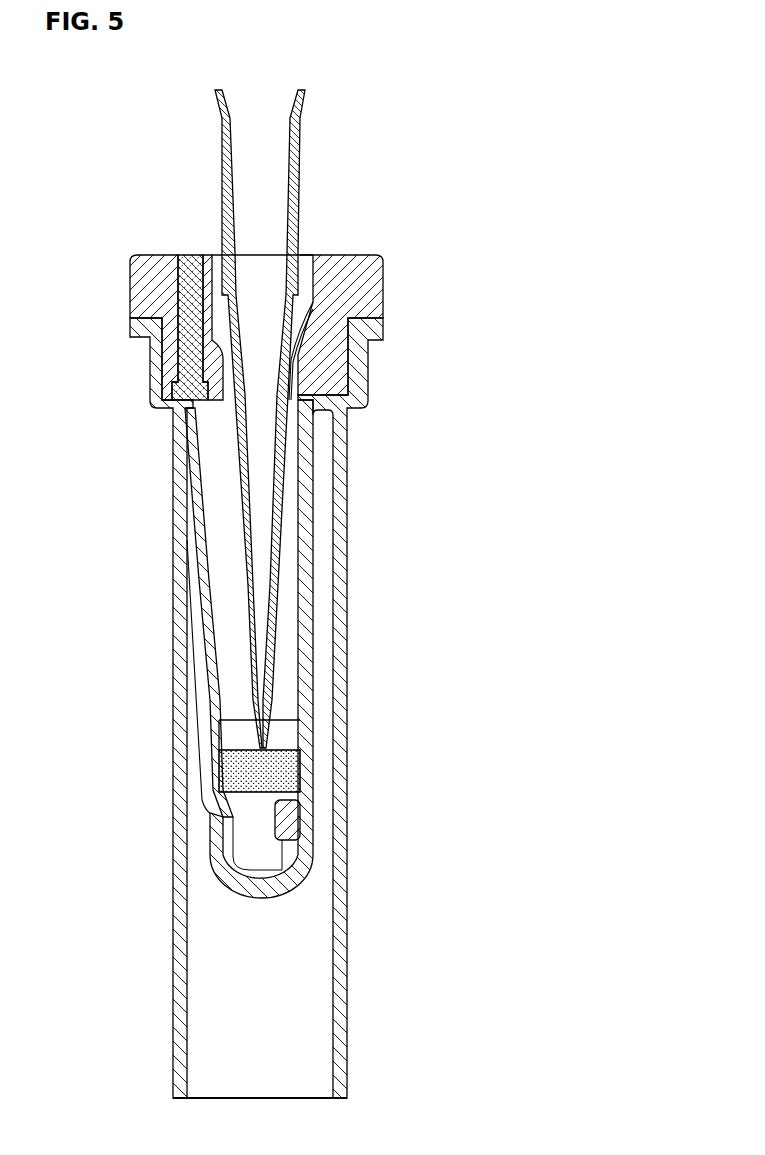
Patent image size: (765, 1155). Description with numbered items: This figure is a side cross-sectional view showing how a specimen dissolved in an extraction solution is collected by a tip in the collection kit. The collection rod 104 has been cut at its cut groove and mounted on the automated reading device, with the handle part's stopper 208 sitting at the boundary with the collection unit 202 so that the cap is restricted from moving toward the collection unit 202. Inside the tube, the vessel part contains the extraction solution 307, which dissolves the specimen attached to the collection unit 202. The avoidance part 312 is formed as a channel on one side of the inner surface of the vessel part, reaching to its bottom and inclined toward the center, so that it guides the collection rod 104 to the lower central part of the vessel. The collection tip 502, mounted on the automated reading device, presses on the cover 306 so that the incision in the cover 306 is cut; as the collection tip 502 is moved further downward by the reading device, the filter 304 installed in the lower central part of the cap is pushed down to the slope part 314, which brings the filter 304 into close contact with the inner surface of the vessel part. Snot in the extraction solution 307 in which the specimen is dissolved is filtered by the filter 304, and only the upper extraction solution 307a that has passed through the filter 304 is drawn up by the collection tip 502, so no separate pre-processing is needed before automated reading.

The collection tip 502 is at (300, 146).
The collection rod 104 is at (189, 262).
The stopper 208 is at (168, 392).
The cover 306 is at (302, 332).
The avoidance part 312 is at (196, 592).
The upper extraction solution 307a is at (292, 732).
The filter 304 is at (220, 760).
The slope part 314 is at (203, 818).
The collection unit 202 is at (300, 818).
The extraction solution 307 is at (247, 842).